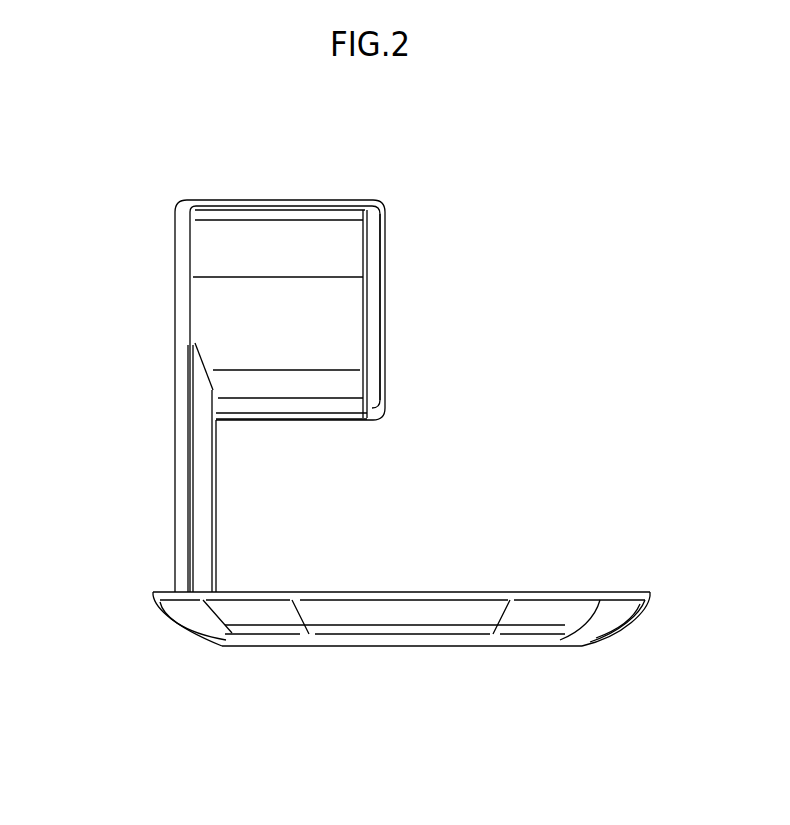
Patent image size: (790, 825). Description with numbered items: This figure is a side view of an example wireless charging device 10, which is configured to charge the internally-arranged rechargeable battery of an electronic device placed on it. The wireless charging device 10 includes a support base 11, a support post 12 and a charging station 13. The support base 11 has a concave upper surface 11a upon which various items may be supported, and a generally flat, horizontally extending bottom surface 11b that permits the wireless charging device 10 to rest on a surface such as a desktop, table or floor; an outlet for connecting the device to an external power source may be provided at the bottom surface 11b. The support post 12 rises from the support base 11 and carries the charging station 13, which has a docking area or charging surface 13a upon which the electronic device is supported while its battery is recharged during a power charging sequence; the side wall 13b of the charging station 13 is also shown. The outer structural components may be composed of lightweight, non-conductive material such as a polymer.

The wireless charging device 10 is at (125, 185).
The support base 11 is at (597, 612).
The concave upper surface 11a is at (528, 592).
The bottom surface 11b is at (288, 652).
The support post 12 is at (176, 575).
The charging station 13 is at (320, 413).
The charging surface 13a is at (255, 209).
The holder side wall 13b is at (385, 240).